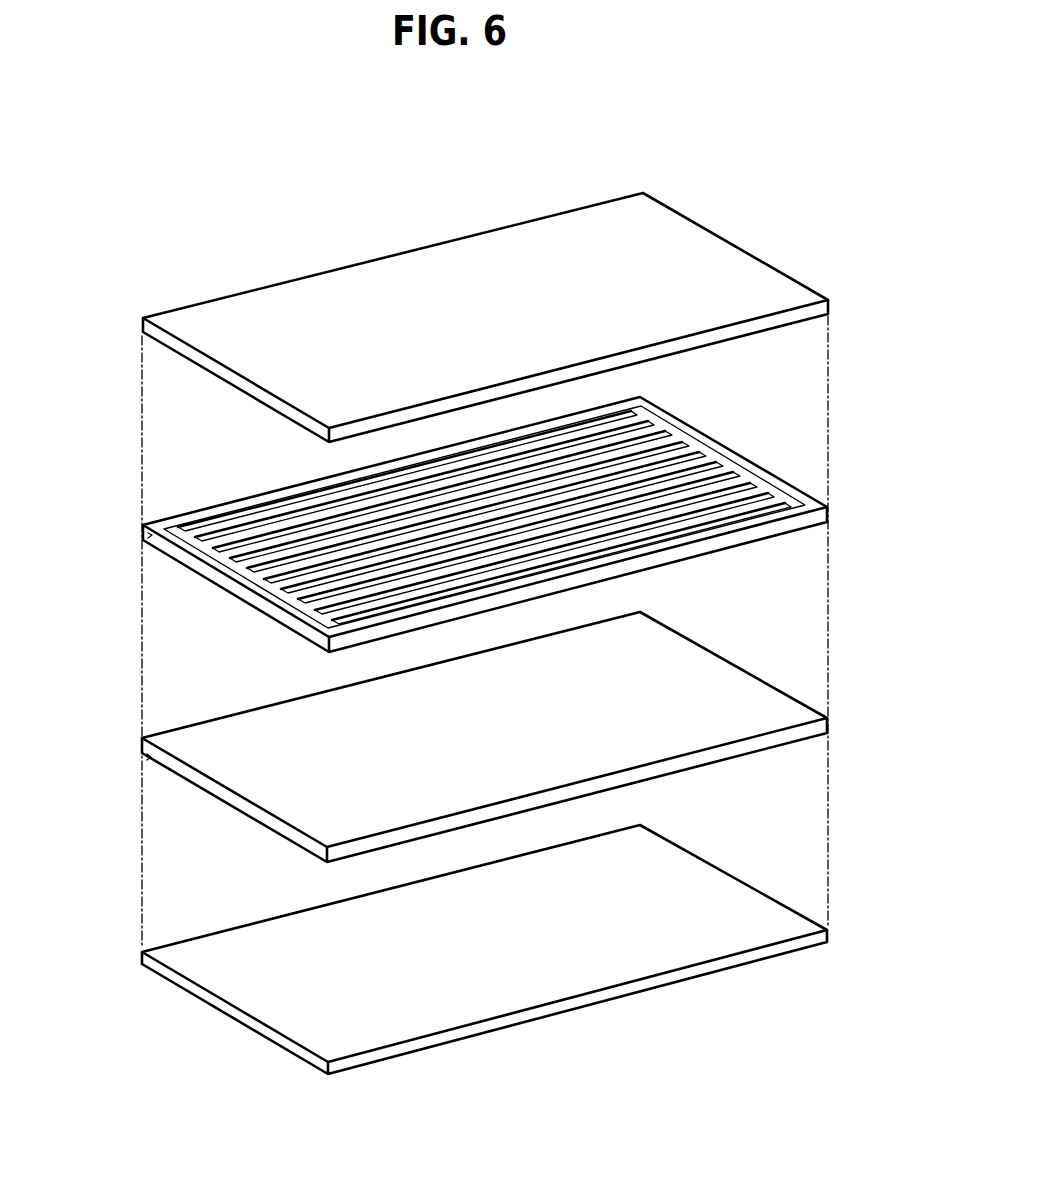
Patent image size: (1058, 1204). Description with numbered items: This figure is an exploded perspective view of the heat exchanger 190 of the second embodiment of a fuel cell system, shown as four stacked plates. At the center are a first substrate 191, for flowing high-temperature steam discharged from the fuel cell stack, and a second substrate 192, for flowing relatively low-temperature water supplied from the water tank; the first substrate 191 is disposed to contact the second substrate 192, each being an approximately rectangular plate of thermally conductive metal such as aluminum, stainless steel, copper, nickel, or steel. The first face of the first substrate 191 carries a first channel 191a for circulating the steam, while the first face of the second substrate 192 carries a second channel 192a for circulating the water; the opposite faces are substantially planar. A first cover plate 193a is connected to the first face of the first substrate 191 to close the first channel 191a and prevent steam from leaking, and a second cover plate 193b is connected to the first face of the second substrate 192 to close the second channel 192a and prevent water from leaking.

The heat exchanger 190 is at (468, 144).
The first substrate 191 is at (485, 524).
The first channel 191a is at (232, 526).
The second substrate 192 is at (444, 737).
The second channel 192a is at (150, 757).
The first cover plate 193a is at (732, 243).
The second cover plate 193b is at (740, 863).